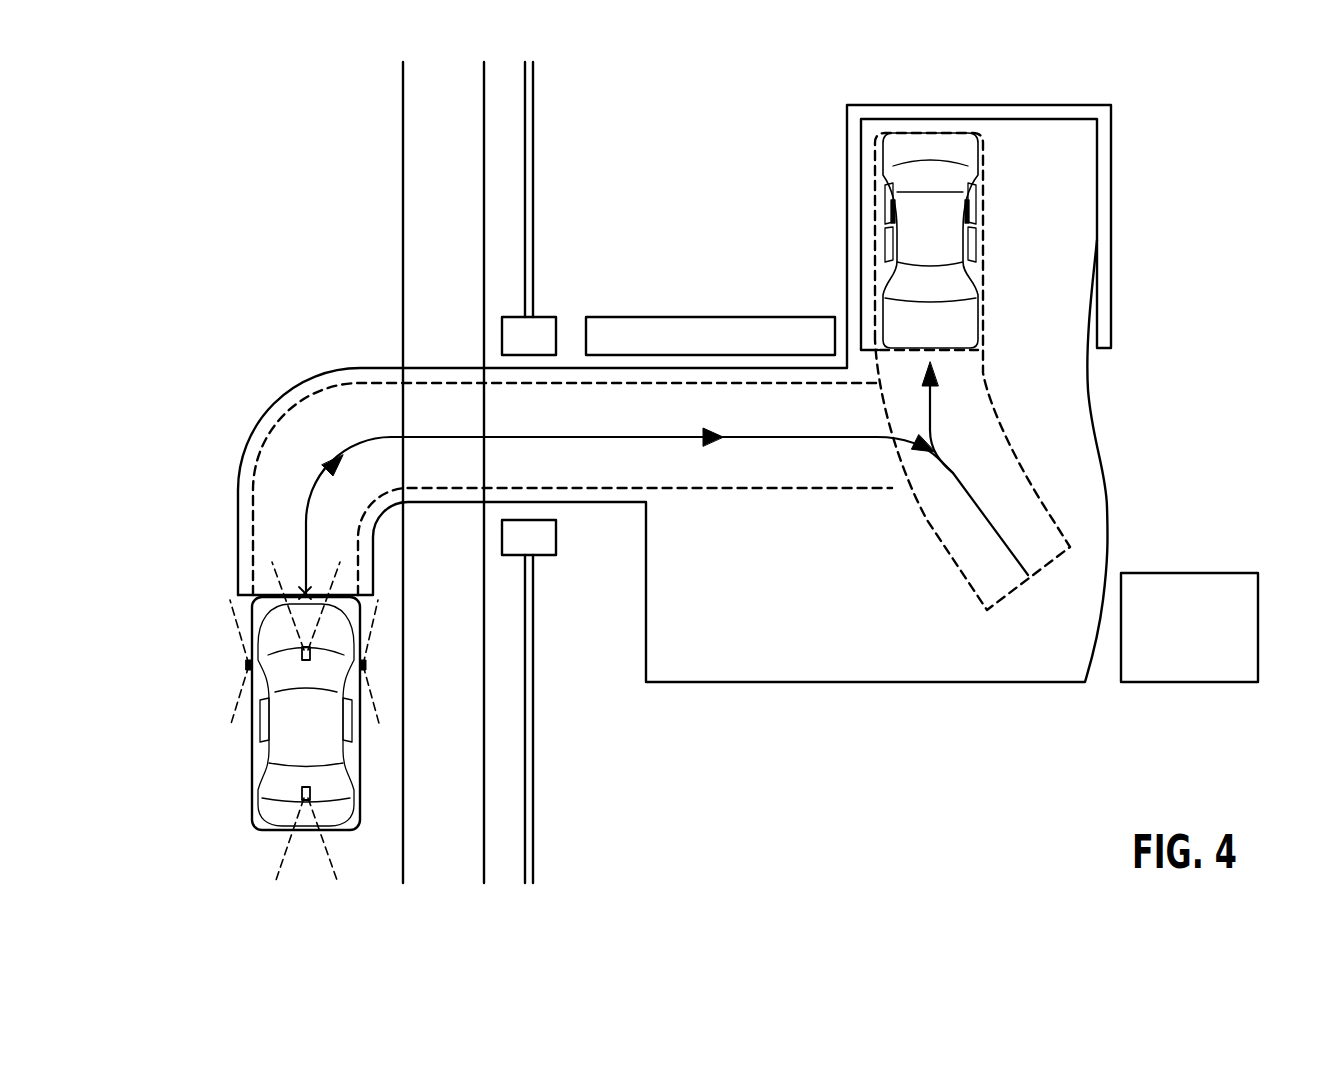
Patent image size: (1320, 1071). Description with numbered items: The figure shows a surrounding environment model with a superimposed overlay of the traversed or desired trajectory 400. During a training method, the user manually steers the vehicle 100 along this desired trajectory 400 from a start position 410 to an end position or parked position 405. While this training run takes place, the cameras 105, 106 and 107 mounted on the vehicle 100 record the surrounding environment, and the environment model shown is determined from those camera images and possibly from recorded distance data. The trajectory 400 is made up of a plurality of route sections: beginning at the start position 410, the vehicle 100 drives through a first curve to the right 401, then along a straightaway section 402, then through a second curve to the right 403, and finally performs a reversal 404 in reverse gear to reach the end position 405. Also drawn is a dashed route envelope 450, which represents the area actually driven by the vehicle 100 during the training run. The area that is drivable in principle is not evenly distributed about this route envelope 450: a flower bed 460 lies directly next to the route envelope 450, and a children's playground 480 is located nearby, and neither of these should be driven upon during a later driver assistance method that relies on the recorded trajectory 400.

The vehicle 100 is at (282, 748).
The camera 105 is at (300, 656).
The camera 106 is at (312, 792).
The camera 107 is at (248, 665).
The desired trajectory 400 is at (380, 437).
The first curve to the right 401 is at (315, 487).
The straightaway section 402 is at (613, 437).
The second curve to the right 403 is at (875, 437).
The reversal in reverse gear 404 is at (936, 411).
The end position 405 is at (912, 247).
The start position 410 is at (305, 593).
The route envelope 450 is at (430, 381).
The flower bed 460 is at (690, 332).
The children's playground 480 is at (1178, 572).